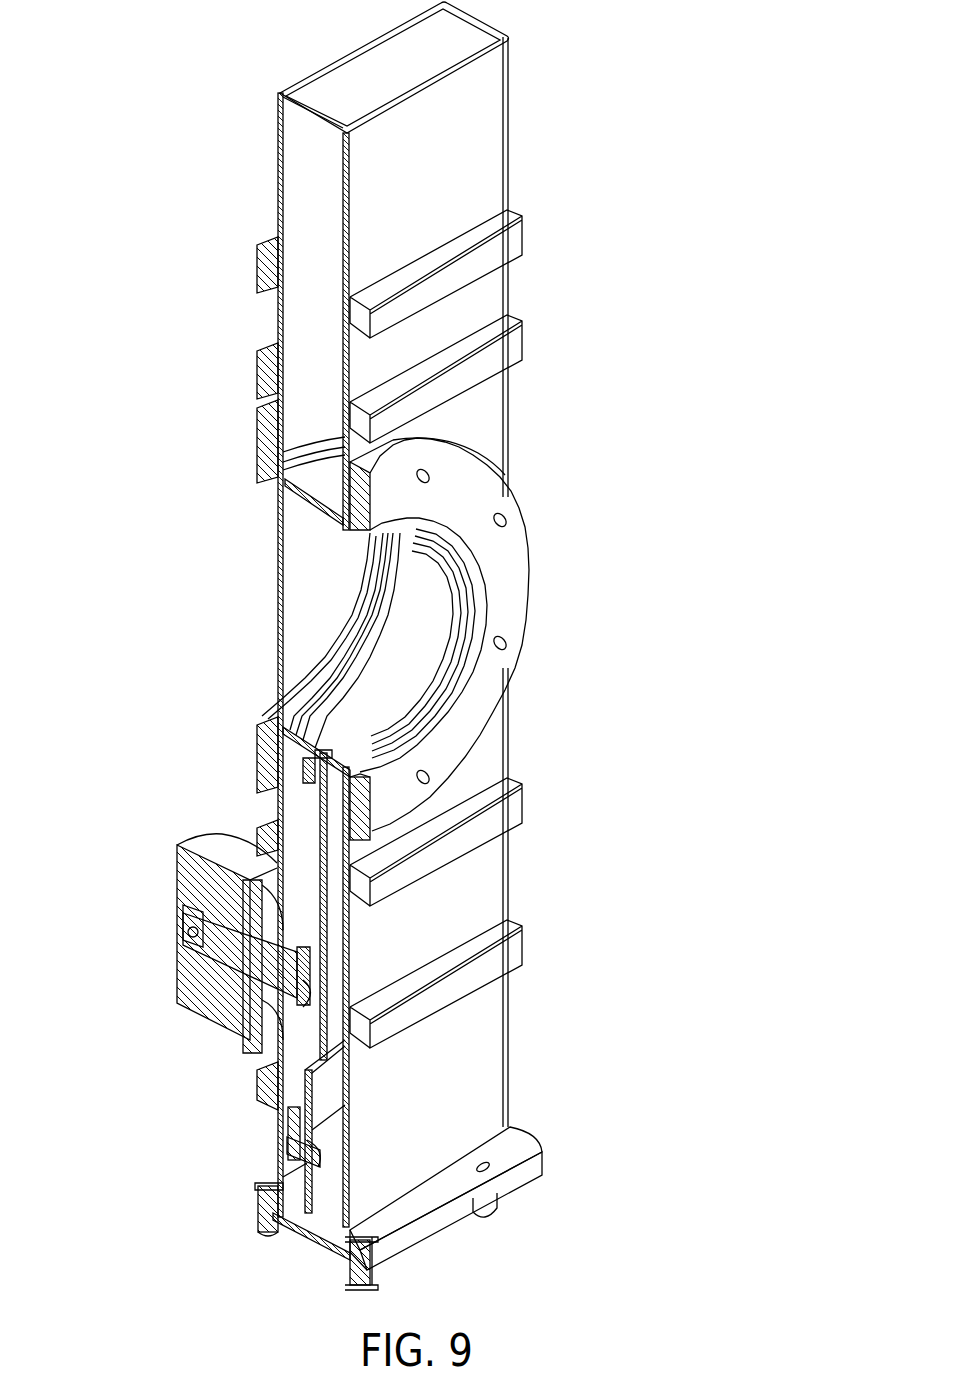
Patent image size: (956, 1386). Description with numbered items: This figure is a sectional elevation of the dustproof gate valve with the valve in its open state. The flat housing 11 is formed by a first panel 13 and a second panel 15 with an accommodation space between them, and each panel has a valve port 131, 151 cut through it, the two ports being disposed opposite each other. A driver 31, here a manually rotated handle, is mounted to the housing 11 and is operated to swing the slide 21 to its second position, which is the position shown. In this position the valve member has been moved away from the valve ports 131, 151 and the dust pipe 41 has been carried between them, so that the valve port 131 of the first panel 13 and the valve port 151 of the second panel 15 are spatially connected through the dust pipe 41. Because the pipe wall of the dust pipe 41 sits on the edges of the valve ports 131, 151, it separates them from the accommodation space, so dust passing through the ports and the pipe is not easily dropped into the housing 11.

The housing 11 is at (515, 115).
The first panel 13 is at (442, 165).
The second panel 15 is at (343, 55).
The valve port 151 is at (340, 658).
The dust pipe 41 is at (410, 619).
The valve port 131 is at (427, 700).
The slide 21 is at (342, 940).
The driver 31 is at (197, 833).